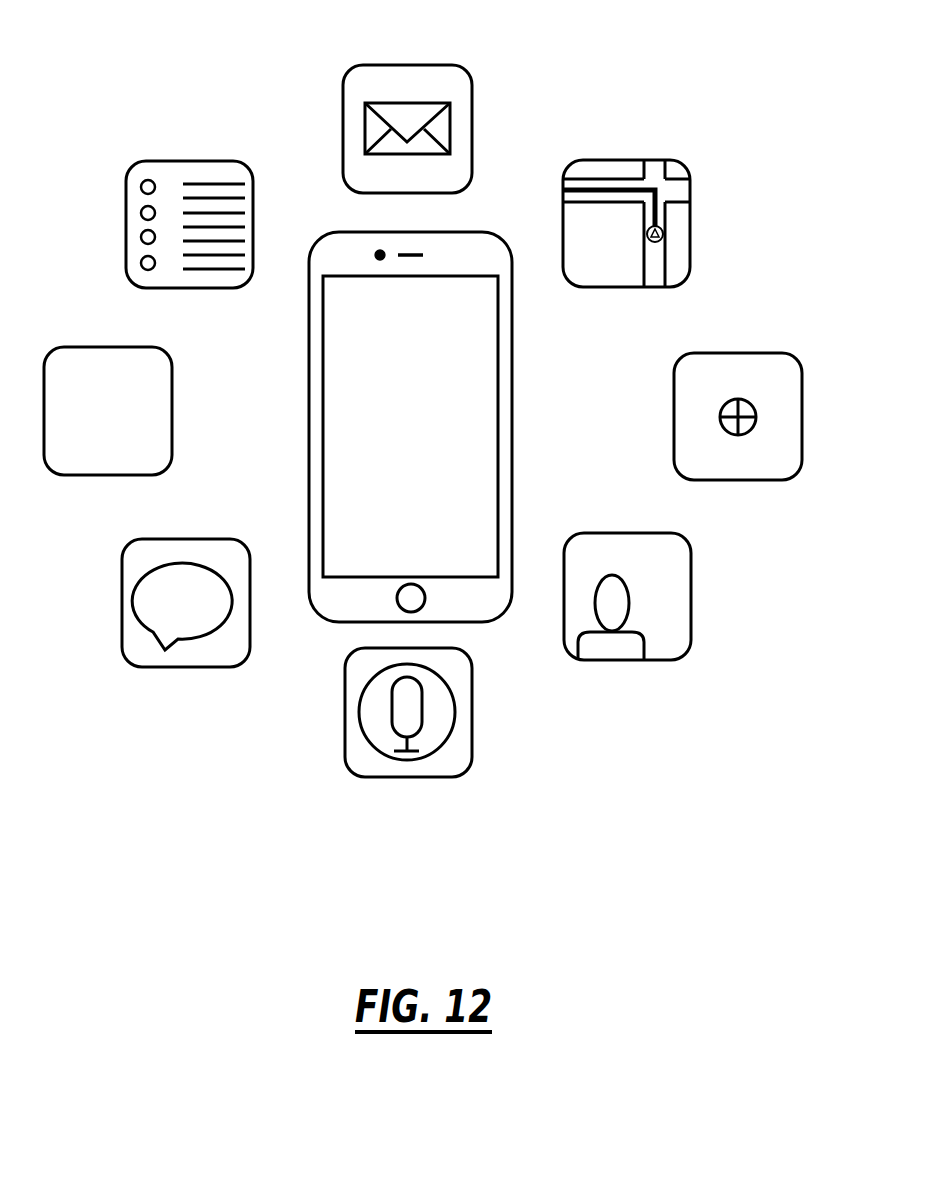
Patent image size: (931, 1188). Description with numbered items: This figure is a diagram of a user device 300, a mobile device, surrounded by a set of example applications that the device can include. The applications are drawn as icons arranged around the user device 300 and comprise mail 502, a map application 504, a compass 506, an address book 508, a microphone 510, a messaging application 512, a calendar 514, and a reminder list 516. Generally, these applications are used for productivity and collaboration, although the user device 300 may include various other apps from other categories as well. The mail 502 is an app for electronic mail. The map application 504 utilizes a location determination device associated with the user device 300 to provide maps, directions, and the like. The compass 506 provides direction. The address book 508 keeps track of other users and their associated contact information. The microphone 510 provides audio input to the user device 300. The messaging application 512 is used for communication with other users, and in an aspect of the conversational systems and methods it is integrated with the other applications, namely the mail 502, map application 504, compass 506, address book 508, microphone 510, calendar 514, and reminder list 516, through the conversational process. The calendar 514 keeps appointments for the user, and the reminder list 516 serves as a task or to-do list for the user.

The user device 300 is at (470, 210).
The mail 502 is at (415, 65).
The map application 504 is at (628, 160).
The compass 506 is at (742, 353).
The address book 508 is at (691, 602).
The microphone 510 is at (472, 740).
The messaging application 512 is at (178, 539).
The calendar 514 is at (172, 410).
The reminder list 516 is at (190, 161).